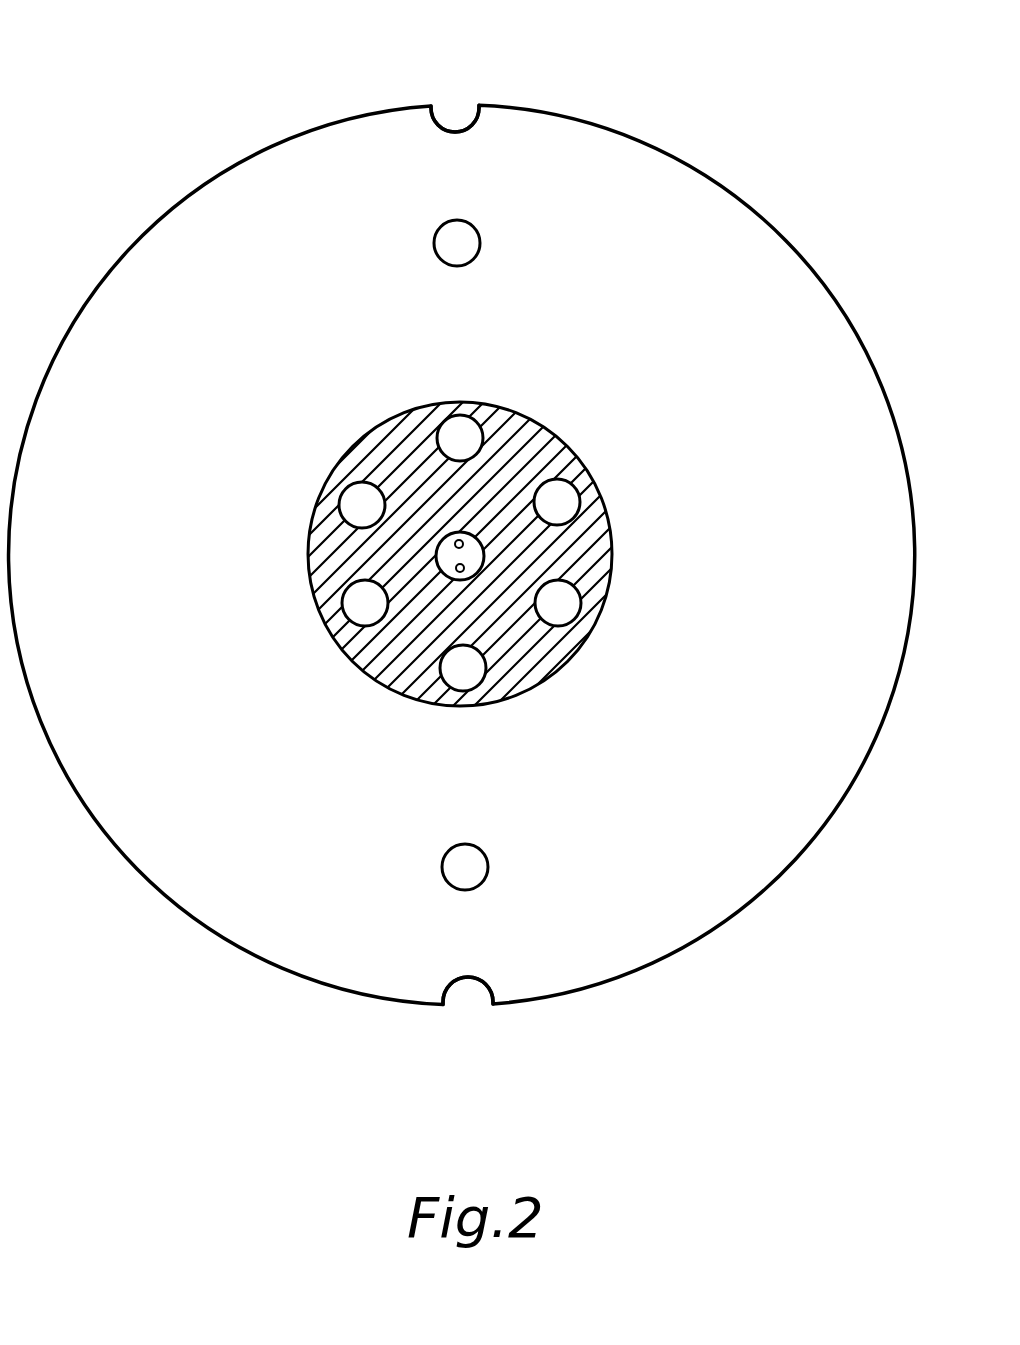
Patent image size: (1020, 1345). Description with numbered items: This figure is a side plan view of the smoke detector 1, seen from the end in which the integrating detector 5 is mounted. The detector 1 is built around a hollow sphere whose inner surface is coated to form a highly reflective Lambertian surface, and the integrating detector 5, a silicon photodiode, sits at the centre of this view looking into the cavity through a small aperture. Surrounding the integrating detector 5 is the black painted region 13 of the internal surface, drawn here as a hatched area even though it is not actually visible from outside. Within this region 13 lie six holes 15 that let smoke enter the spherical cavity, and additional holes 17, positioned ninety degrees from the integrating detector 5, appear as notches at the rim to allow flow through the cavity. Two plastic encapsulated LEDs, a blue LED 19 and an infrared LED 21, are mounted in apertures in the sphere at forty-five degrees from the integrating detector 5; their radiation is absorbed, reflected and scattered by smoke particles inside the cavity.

The smoke detector 1 is at (660, 108).
The integrating detector 5 is at (445, 558).
The black painted region 13 is at (502, 630).
The holes 15 is at (443, 440).
The additional holes 17 is at (450, 112).
The blue LED 19 is at (470, 243).
The infrared LED 21 is at (483, 870).